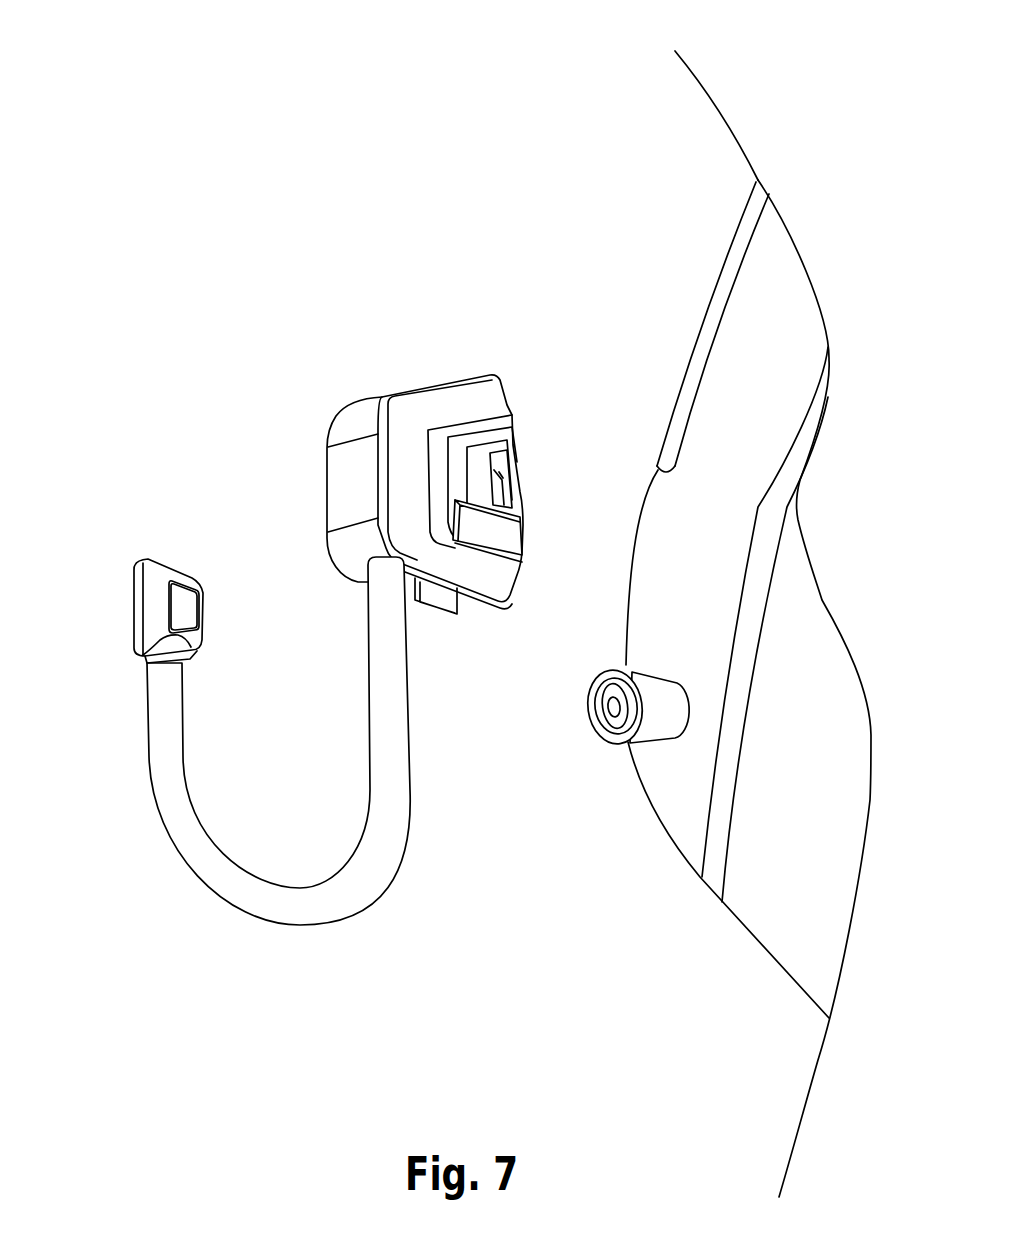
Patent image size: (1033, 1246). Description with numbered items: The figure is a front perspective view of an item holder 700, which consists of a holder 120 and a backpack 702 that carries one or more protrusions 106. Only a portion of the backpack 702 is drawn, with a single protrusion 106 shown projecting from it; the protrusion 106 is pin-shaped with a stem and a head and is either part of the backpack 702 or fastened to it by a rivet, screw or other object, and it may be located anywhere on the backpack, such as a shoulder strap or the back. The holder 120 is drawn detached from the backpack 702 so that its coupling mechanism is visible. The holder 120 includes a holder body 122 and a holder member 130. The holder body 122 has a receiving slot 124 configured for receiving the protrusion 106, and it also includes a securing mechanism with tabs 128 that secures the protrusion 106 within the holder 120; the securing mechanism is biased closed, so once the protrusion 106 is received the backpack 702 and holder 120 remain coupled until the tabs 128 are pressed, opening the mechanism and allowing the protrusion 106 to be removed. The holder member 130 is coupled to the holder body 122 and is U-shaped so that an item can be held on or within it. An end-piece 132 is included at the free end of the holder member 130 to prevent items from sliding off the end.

The item holder 700 is at (453, 609).
The backpack 702 is at (732, 229).
The protrusion 106 is at (610, 743).
The holder 120 is at (351, 616).
The holder body 122 is at (469, 503).
The receiving slot 124 is at (472, 615).
The tabs 128 is at (500, 535).
The holder member 130 is at (173, 847).
The end-piece 132 is at (155, 558).